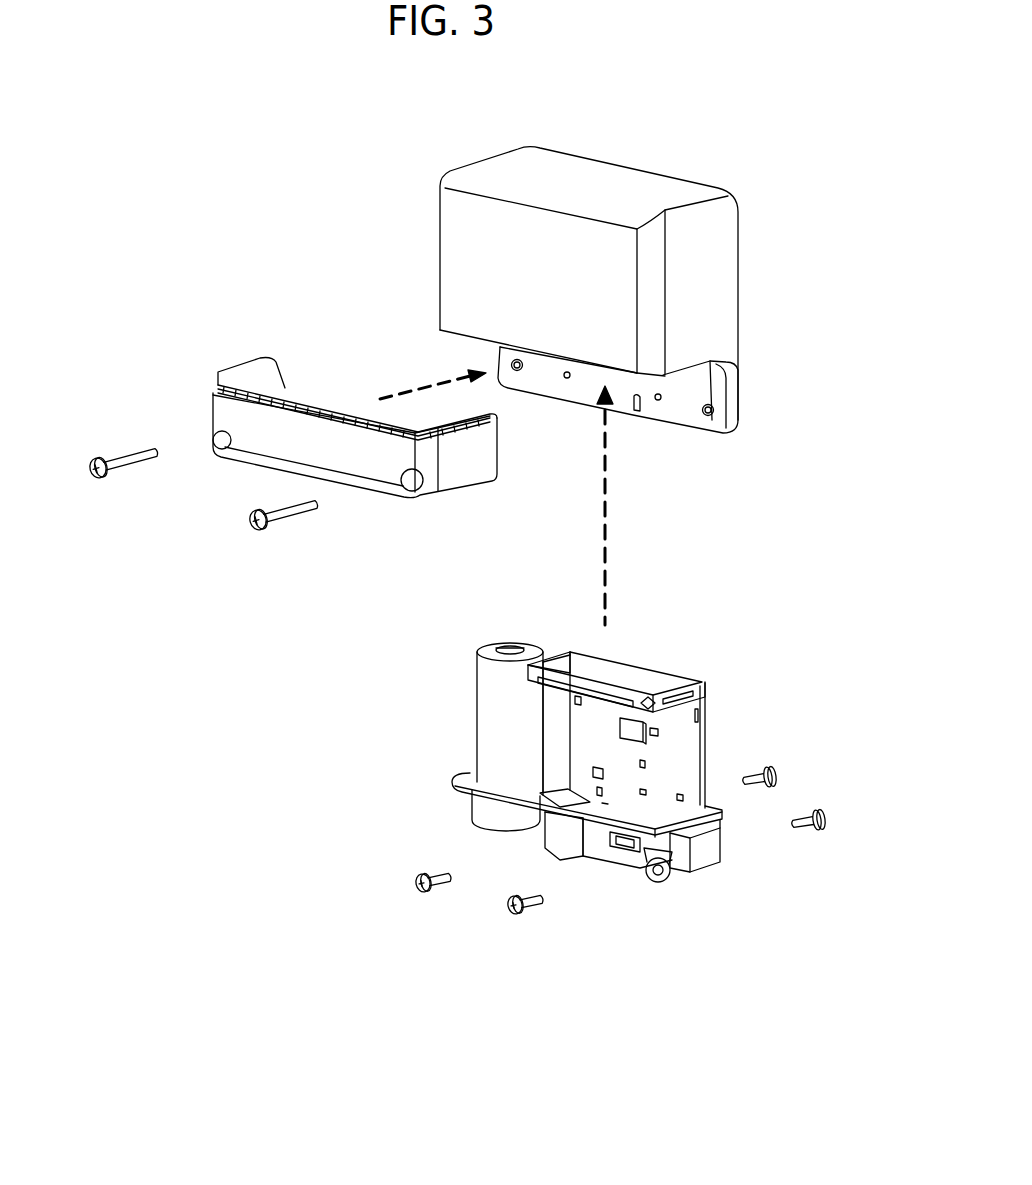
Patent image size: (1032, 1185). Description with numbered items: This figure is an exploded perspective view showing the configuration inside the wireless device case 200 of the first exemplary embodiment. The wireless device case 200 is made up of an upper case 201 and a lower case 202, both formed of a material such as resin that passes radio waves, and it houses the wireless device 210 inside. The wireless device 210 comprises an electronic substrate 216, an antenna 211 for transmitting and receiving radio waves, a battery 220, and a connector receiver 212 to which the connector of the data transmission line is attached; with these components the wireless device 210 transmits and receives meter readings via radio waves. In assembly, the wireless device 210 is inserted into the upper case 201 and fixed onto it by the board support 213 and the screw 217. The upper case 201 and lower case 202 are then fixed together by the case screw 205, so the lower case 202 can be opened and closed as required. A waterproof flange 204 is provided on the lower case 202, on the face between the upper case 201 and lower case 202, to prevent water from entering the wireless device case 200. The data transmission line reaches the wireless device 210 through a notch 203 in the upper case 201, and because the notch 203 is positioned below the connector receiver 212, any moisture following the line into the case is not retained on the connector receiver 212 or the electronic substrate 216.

The wireless device case 200 is at (387, 207).
The upper case 201 is at (680, 187).
The lower case 202 is at (270, 443).
The notch 203 is at (633, 415).
The waterproof flange 204 is at (233, 372).
The case screw 205 is at (250, 525).
The wireless device 210 is at (735, 698).
The antenna 211 is at (632, 692).
The connector receiver 212 is at (670, 868).
The board support 213 is at (705, 852).
The electronic substrate 216 is at (603, 657).
The screw 217 is at (508, 908).
The battery 220 is at (482, 700).